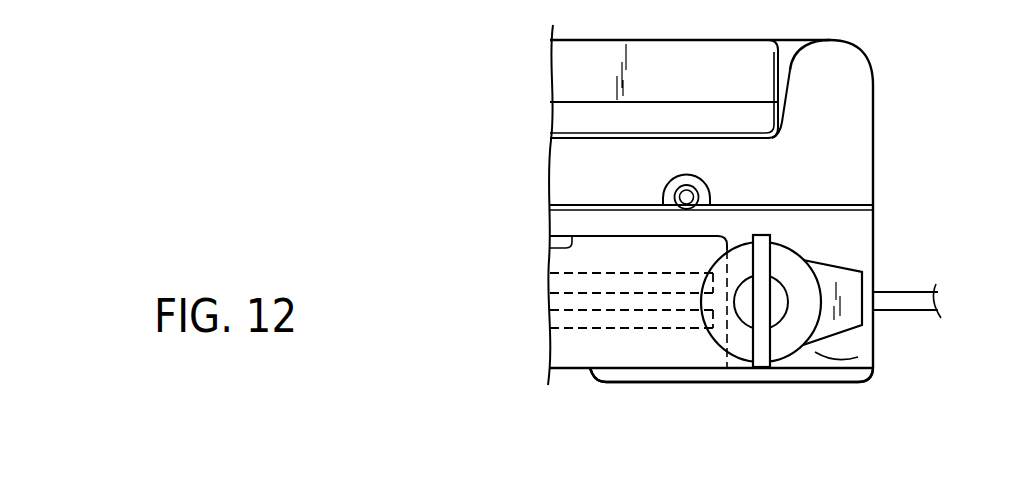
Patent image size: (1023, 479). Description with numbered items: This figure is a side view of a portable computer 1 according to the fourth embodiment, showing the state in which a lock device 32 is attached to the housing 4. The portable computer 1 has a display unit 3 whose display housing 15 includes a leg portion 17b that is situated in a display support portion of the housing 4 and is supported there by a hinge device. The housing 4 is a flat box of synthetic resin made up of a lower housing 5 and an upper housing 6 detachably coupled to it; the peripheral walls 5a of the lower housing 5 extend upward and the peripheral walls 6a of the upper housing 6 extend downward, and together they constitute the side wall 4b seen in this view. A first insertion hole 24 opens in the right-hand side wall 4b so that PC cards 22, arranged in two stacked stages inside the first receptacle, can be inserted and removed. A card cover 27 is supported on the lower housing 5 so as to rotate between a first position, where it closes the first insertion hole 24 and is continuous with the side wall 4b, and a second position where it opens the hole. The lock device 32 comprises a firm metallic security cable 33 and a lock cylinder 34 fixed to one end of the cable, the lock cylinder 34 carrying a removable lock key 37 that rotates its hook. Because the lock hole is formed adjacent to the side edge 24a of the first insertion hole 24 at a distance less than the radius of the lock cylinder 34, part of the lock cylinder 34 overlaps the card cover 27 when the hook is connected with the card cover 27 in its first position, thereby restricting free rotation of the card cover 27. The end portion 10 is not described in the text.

The portable computer 1 is at (890, 110).
The display unit 3 is at (562, 62).
The housing 4 is at (955, 150).
The side wall 4b is at (740, 216).
The lower housing 5 is at (858, 230).
The peripheral wall 5a is at (565, 220).
The upper housing 6 is at (852, 176).
The peripheral wall 6a is at (560, 168).
The housing end portion 10 is at (838, 72).
The display housing 15 is at (590, 116).
The leg portion 17b is at (784, 54).
The PC card 22 is at (556, 317).
The first insertion hole 24 is at (565, 248).
The side edge 24a is at (724, 338).
The card cover 27 is at (565, 348).
The lock device 32 is at (866, 356).
The security cable 33 is at (930, 302).
The lock cylinder 34 is at (810, 284).
The lock key 37 is at (762, 256).